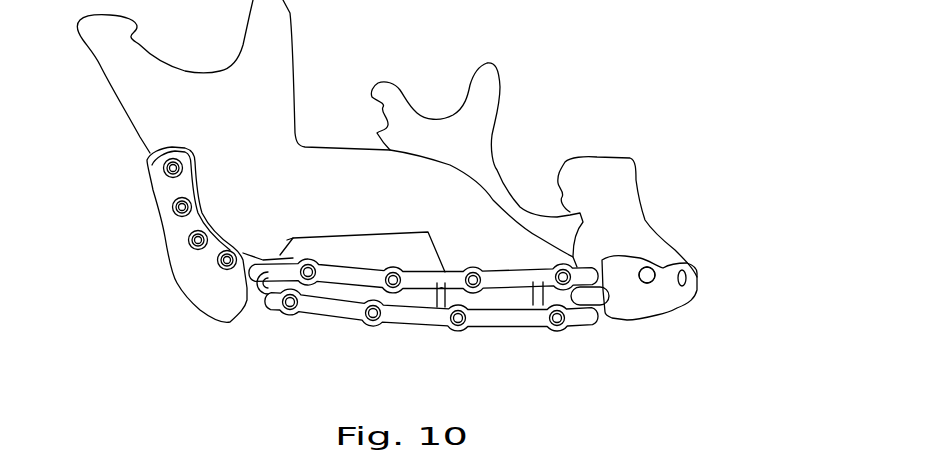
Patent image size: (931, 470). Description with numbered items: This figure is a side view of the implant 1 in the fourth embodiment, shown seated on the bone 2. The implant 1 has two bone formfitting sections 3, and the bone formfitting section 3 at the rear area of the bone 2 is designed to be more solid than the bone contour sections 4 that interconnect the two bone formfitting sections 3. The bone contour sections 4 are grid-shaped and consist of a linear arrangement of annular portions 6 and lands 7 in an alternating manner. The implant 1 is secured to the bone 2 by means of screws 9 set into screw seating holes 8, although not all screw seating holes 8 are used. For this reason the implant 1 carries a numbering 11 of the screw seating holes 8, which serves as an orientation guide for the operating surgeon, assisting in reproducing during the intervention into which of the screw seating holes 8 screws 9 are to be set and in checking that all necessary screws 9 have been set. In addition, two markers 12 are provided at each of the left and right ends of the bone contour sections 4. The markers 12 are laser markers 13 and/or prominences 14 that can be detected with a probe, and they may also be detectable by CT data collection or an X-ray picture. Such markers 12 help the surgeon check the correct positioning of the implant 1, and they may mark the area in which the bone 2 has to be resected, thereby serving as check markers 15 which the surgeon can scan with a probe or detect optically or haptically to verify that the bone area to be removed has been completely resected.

The implant 1 is at (429, 276).
The bone 2 is at (142, 103).
The bone formfitting section 3 is at (168, 235).
The bone contour section 4 is at (425, 280).
The annular portion 6 is at (308, 258).
The land 7 is at (348, 278).
The screw seating hole 8 is at (653, 267).
The screw 9 is at (163, 170).
The numbering 11 is at (437, 307).
The marker 12 is at (457, 338).
The laser marker 13 is at (433, 288).
The prominence 14 is at (433, 288).
The check marker 15 is at (247, 288).